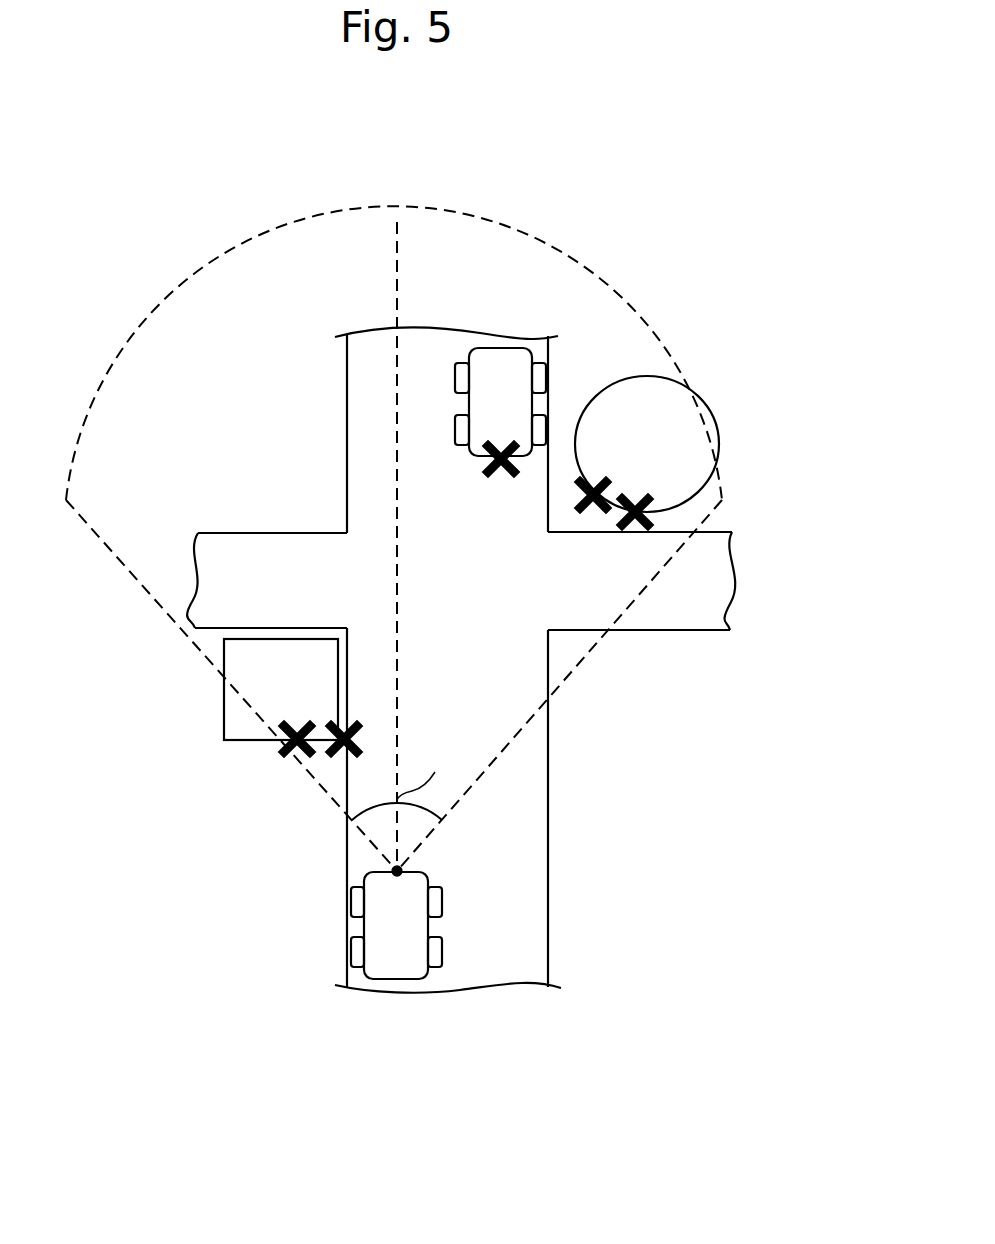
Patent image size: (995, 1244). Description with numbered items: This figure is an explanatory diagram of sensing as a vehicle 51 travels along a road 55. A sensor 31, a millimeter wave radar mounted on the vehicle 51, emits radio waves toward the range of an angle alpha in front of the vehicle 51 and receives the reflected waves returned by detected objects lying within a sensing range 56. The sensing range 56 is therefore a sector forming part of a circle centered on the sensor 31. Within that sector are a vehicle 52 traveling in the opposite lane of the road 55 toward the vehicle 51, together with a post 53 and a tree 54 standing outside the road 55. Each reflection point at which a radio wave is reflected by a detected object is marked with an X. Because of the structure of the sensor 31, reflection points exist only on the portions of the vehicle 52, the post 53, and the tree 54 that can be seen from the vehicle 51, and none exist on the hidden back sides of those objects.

The sensor 31 is at (393, 873).
The vehicle 51 is at (387, 967).
The vehicle 52 is at (523, 366).
The post 53 is at (235, 742).
The tree 54 is at (711, 419).
The road 55 is at (548, 884).
The sensing range 56 is at (568, 675).